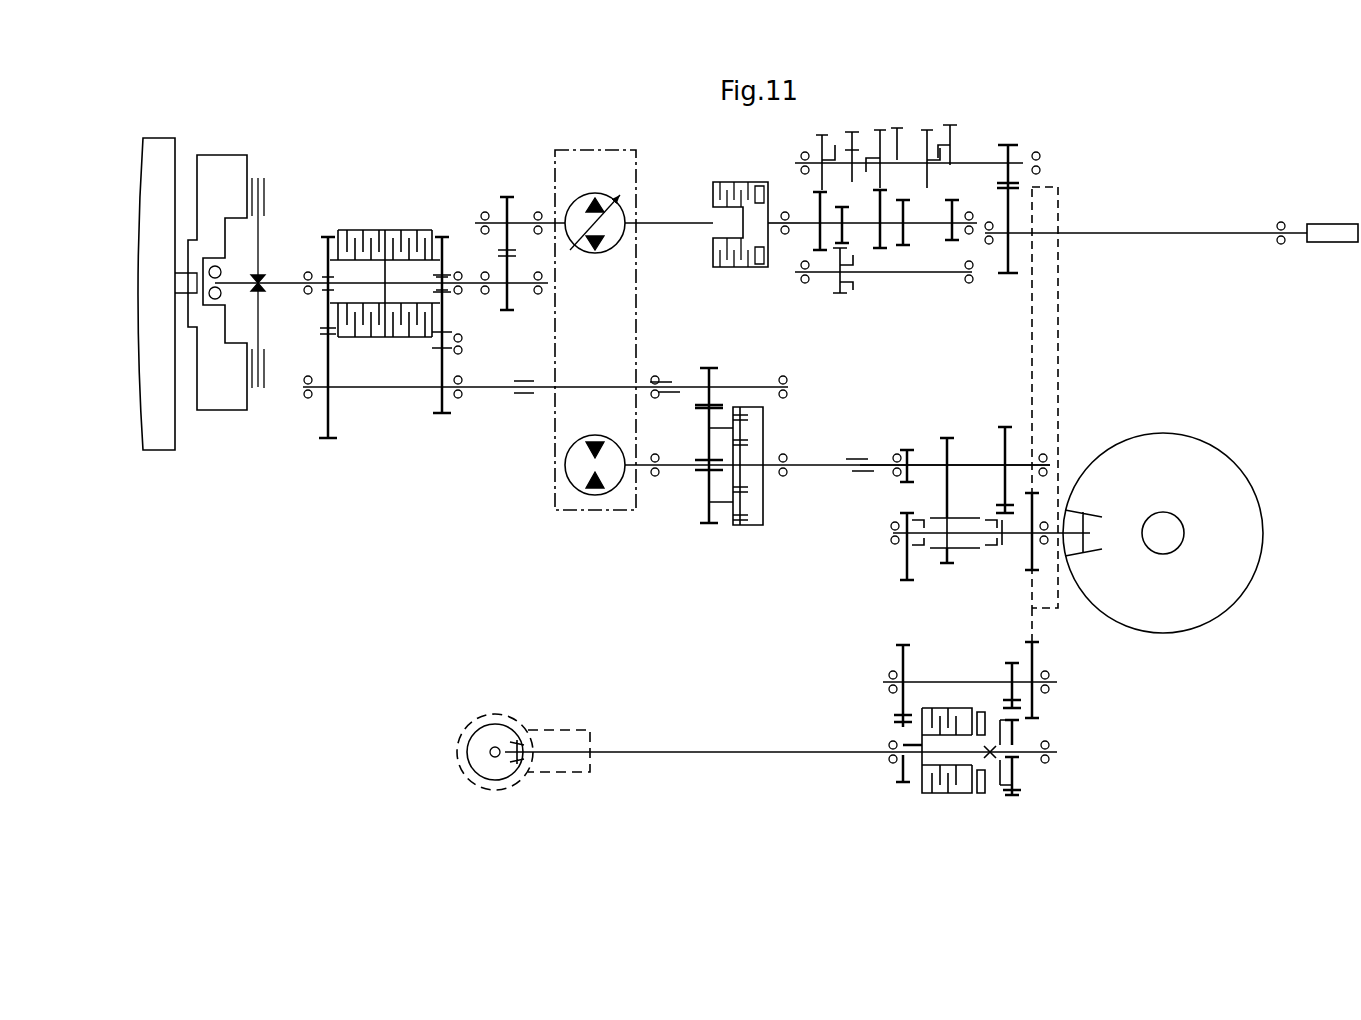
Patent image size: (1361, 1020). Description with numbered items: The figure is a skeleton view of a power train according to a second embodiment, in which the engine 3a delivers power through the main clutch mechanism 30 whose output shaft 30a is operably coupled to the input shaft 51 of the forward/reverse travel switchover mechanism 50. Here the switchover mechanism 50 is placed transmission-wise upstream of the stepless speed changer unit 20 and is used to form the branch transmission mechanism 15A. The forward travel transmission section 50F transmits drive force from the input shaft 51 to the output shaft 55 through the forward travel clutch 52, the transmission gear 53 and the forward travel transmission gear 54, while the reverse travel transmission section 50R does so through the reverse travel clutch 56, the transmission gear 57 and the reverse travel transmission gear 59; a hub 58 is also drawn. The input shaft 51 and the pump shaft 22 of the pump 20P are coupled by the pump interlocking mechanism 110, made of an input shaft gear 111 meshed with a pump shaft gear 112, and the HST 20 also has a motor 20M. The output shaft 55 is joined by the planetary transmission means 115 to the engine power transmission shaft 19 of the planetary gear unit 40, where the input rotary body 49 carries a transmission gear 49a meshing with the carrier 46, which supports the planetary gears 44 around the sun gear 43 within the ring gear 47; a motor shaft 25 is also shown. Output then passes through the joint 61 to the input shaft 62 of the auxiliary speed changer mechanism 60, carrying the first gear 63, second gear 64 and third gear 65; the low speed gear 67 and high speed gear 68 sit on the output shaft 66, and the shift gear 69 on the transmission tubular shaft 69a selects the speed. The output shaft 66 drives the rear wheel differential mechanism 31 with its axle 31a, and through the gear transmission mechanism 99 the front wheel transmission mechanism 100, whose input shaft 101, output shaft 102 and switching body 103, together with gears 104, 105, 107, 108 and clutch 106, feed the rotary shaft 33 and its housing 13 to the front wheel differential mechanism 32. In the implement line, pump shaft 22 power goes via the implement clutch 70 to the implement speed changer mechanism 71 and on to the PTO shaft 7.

The engine 3a is at (158, 142).
The main clutch mechanism 30 is at (225, 150).
The output shaft of the main clutch mechanism 30a is at (303, 272).
The branch transmission mechanism 15A is at (384, 338).
The forward/reverse travel switchover mechanism 50 is at (384, 353).
The forward travel transmission section 50F is at (326, 455).
The reverse travel transmission section 50R is at (443, 430).
The input shaft 51 is at (377, 310).
The forward travel clutch 52 is at (362, 229).
The transmission gear 53 is at (325, 312).
The forward travel transmission gear 54 is at (327, 425).
The output shaft 55 is at (482, 393).
The reverse travel clutch 56 is at (406, 229).
The transmission gear 57 is at (440, 249).
The reverse output gear hub 58 is at (450, 334).
The reverse travel transmission gear 59 is at (435, 403).
The pump interlocking mechanism 110 is at (506, 196).
The input shaft gear 111 is at (510, 308).
The pump shaft gear 112 is at (505, 200).
The planetary transmission means 115 is at (524, 398).
The pump shaft 22 is at (524, 210).
The stepless speed changer unit (HST) 20 is at (591, 320).
The pump 20P is at (594, 192).
The motor 20M is at (594, 497).
The engine power transmission shaft 19 is at (584, 385).
The implement clutch 70 is at (725, 186).
The implement speed changer mechanism 71 is at (968, 140).
The PTO shaft 7 is at (1322, 223).
The gear transmission mechanism 99 is at (1058, 280).
The input rotary body 49 is at (745, 378).
The transmission gear 49a is at (706, 367).
The motor shaft 25 is at (673, 473).
The planetary gear unit 40 is at (738, 510).
The carrier 46 is at (708, 447).
The ring gear 47 is at (748, 528).
The sun gear 43 is at (752, 478).
The planetary gears 44 is at (764, 437).
The joint 61 is at (858, 455).
The input shaft 62 is at (970, 463).
The first gear 63 is at (908, 448).
The second gear 64 is at (947, 436).
The third gear 65 is at (1004, 425).
The output shaft 66 is at (1030, 515).
The auxiliary speed changer mechanism 60 is at (954, 539).
The low speed gear 67 is at (903, 568).
The high speed gear 68 is at (1007, 565).
The shift gear 69 is at (943, 565).
The transmission tubular shaft 69a is at (950, 565).
The rear wheel differential mechanism 31 is at (1200, 445).
The axle 31a is at (1093, 555).
The front wheel transmission mechanism 100 is at (956, 736).
The input shaft 101 is at (942, 680).
The output shaft 102 is at (893, 750).
The switching body 103 is at (993, 792).
The gear hub 104 is at (1020, 795).
The gear 105 is at (1010, 664).
The PTO clutch 106 is at (943, 795).
The gear 107 is at (900, 662).
The gear 108 is at (900, 780).
The PTO shaft housing 13 is at (458, 748).
The front wheel differential mechanism 32 is at (478, 722).
The rotary shaft 33 is at (668, 760).